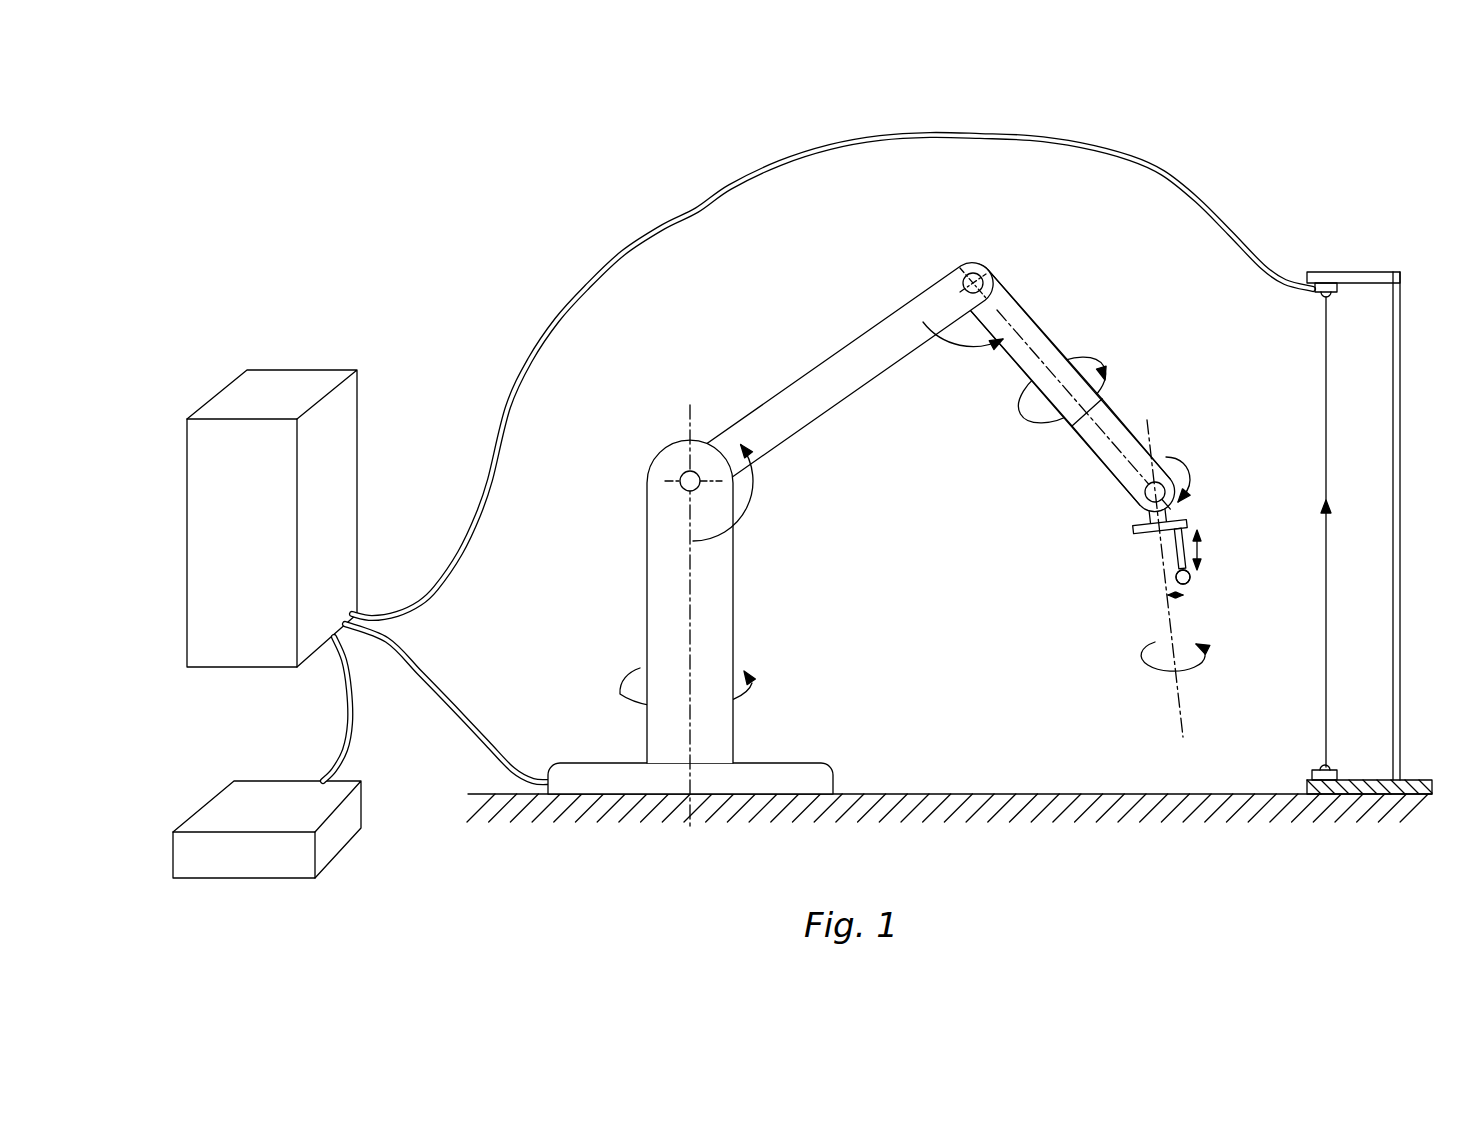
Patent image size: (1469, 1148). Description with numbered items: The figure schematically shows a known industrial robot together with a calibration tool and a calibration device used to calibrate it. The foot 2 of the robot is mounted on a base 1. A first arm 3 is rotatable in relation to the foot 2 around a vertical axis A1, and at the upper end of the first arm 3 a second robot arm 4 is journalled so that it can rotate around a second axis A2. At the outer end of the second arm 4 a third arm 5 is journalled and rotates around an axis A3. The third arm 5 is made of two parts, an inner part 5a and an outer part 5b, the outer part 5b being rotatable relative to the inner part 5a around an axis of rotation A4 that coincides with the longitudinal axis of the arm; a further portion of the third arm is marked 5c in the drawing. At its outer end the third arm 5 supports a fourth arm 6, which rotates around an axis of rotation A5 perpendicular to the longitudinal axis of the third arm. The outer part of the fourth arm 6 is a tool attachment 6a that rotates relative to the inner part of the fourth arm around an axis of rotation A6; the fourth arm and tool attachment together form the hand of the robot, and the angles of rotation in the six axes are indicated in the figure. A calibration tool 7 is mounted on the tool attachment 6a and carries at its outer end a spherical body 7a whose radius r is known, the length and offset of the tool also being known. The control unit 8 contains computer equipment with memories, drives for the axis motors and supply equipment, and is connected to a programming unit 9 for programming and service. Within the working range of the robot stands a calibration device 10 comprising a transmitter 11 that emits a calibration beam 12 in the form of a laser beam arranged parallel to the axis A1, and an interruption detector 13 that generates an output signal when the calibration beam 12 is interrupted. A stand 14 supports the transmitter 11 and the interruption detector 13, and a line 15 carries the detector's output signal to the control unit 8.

The base 1 is at (960, 793).
The foot 2 is at (558, 772).
The first arm 3 is at (717, 642).
The second robot arm 4 is at (825, 370).
The third arm 5 is at (1088, 318).
The inner part of third arm 5a is at (1012, 366).
The outer part of third arm 5b is at (1117, 458).
The forearm rotating joint 5c is at (1103, 393).
The fourth arm 6 is at (1173, 506).
The tool attachment 6a is at (1140, 530).
The calibration tool 7 is at (1176, 556).
The spherical body 7a is at (1165, 578).
The control unit 8 is at (350, 505).
The programming unit 9 is at (270, 856).
The calibration device 10 is at (1382, 533).
The transmitter 11 is at (1324, 766).
The calibration beam 12 is at (1330, 607).
The interruption detector 13 is at (1330, 299).
The stand 14 is at (1400, 402).
The line 15 is at (735, 184).
The vertical axis A1 is at (690, 420).
The second axis A2 is at (685, 485).
The axis of rotation of third arm A3 is at (975, 270).
The axis of rotation of outer part A4 is at (1013, 322).
The axis of rotation of fourth arm A5 is at (1143, 497).
The axis of rotation of tool attachment A6 is at (1190, 622).
The radius r is at (1192, 575).